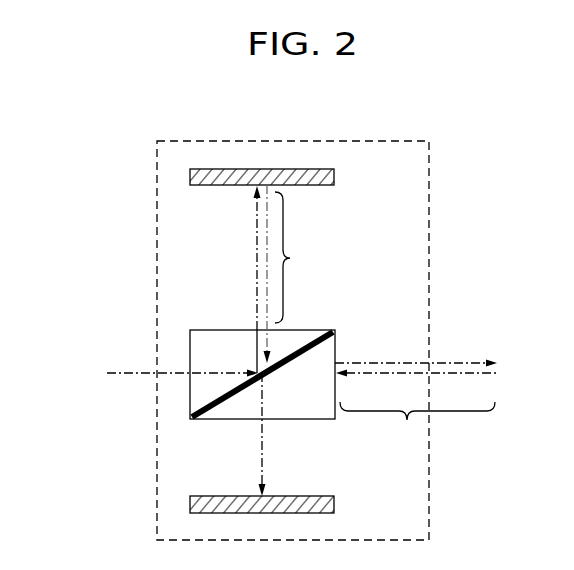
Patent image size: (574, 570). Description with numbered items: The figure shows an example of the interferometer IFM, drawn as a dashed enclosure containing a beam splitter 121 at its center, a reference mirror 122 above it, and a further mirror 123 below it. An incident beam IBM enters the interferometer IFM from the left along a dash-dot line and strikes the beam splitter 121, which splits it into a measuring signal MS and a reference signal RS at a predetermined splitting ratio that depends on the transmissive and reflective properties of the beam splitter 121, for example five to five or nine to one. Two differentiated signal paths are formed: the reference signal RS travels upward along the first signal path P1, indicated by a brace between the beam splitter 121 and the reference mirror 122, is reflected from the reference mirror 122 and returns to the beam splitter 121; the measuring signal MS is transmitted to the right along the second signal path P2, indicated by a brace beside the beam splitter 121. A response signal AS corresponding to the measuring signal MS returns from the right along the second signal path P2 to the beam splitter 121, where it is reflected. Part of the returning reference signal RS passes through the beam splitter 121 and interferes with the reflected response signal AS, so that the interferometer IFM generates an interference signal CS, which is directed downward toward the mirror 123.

The interferometer IFM is at (293, 141).
The beam splitter 121 is at (303, 328).
The reference mirror 122 is at (336, 178).
The mirror / detector 123 is at (337, 495).
The incident beam IBM is at (162, 375).
The reference signal RS is at (239, 279).
The measuring signal MS is at (416, 350).
The response signal AS is at (416, 388).
The interference signal CS is at (281, 434).
The first signal path P1 is at (301, 257).
The second signal path P2 is at (417, 425).